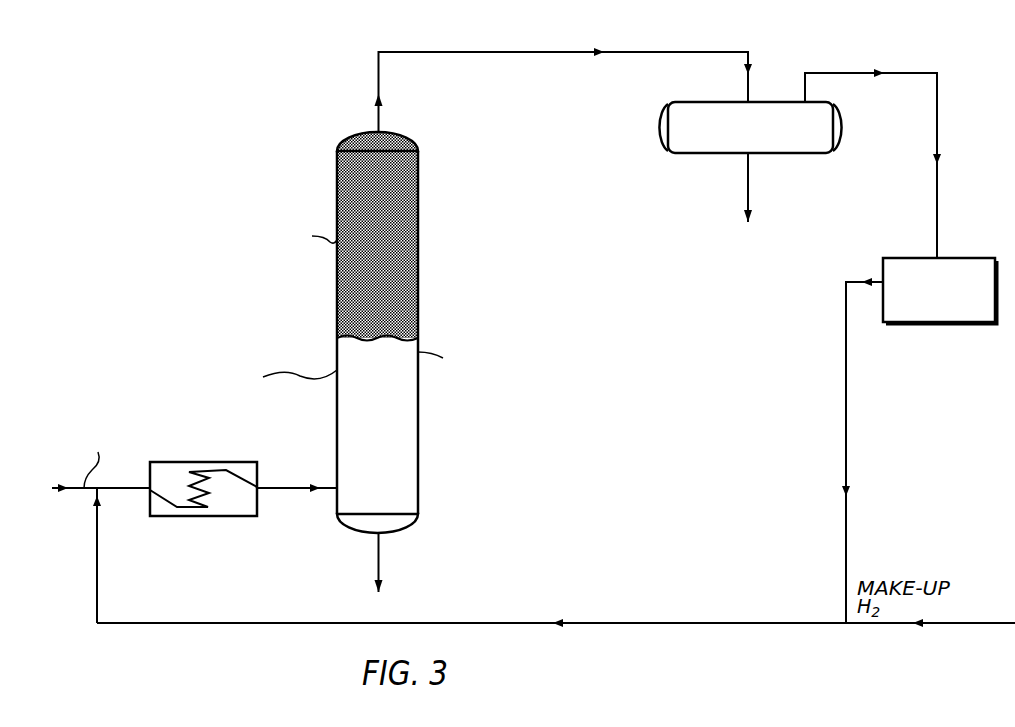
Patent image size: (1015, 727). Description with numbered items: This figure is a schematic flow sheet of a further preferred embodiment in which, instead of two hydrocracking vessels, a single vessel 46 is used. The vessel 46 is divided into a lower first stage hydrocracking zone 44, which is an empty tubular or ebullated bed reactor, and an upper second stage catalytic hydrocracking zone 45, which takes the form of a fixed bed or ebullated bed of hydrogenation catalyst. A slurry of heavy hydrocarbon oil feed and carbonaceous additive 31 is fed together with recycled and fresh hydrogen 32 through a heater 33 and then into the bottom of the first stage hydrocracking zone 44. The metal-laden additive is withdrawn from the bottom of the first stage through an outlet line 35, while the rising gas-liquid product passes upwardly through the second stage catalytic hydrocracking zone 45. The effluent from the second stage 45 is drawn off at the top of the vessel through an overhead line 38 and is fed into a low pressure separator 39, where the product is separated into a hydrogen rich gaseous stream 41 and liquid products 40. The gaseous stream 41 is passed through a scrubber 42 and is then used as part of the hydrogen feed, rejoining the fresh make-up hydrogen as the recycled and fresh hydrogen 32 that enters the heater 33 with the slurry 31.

The slurry of heavy hydrocarbon oil feed and carbonaceous additive 31 is at (63, 490).
The recycled and fresh hydrogen 32 is at (97, 585).
The heater 33 is at (244, 462).
The outlet line 35 is at (378, 565).
The overhead line 38 is at (541, 36).
The low pressure separator 39 is at (695, 102).
The liquid products 40 is at (748, 190).
The hydrogen rich gaseous stream 41 is at (835, 73).
The scrubber 42 is at (940, 322).
The first stage hydrocracking zone 44 is at (418, 438).
The second stage catalytic hydrocracking zone 45 is at (418, 250).
The single vessel 46 is at (418, 323).